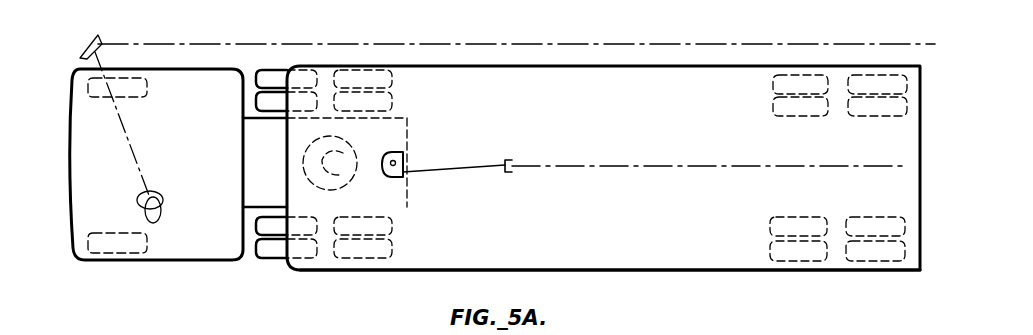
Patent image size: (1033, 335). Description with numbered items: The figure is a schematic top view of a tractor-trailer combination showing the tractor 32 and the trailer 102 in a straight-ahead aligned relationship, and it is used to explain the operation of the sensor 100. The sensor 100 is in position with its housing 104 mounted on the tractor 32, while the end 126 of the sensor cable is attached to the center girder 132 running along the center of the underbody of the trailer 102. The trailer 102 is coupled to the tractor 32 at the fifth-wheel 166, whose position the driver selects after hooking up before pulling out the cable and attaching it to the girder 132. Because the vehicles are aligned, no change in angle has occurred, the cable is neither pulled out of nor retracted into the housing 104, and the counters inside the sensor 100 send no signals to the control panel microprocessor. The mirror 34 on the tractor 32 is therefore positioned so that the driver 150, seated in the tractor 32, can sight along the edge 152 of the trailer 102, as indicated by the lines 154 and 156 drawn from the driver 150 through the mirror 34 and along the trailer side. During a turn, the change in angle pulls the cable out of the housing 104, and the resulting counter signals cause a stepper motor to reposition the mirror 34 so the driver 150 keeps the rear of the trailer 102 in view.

The tractor 32 is at (145, 262).
The mirror 34 is at (92, 36).
The sensor 100 is at (421, 161).
The trailer 102 is at (745, 272).
The housing 104 is at (396, 178).
The end of the cable 126 is at (505, 172).
The center girder 132 is at (660, 165).
The driver 150 is at (160, 206).
The edge of the trailer 152 is at (606, 68).
The line 154 is at (118, 103).
The line 156 is at (240, 43).
The fifth-wheel 166 is at (302, 150).